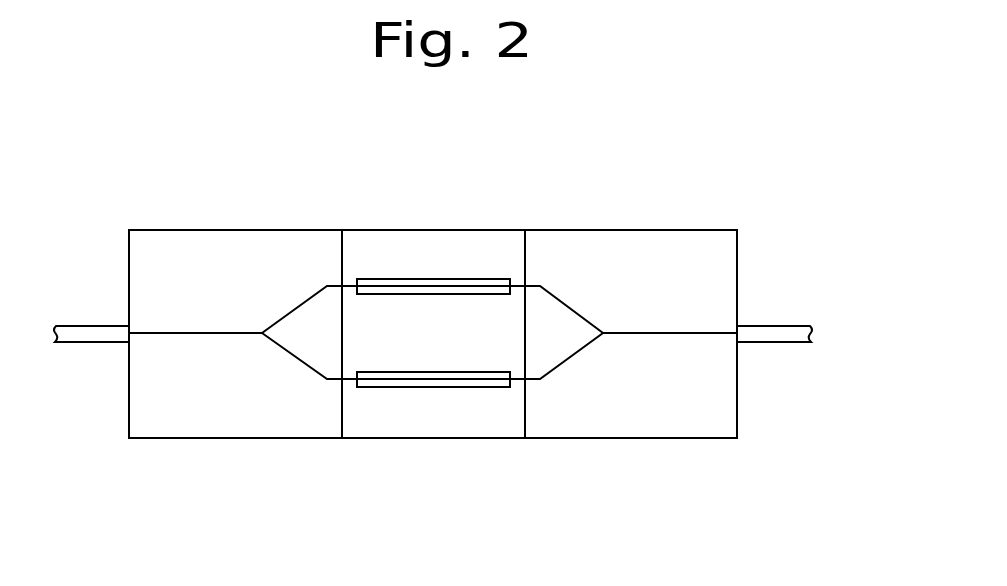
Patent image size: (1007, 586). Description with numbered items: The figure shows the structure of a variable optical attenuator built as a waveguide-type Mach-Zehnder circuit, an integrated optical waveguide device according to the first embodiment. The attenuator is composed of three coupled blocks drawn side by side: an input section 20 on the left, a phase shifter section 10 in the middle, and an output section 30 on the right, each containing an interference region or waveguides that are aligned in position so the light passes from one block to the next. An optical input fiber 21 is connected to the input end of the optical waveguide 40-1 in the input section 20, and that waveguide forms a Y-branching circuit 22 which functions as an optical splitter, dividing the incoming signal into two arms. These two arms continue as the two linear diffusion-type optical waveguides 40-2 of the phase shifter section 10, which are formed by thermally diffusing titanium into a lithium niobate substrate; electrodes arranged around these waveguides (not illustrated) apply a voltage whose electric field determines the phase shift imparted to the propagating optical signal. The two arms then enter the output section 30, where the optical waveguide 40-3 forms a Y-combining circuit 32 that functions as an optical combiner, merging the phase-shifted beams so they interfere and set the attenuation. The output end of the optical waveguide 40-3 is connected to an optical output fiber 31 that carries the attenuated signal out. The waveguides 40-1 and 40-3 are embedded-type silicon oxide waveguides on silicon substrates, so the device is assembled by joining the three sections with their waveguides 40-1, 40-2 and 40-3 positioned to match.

The phase shifter section 10 is at (400, 248).
The input section 20 is at (185, 438).
The optical input fiber 21 is at (96, 326).
The Y-branching circuit 22 is at (283, 393).
The output section 30 is at (595, 438).
The optical output fiber 31 is at (780, 342).
The Y-combining circuit 32 is at (565, 393).
The optical waveguide 40-1 is at (150, 333).
The optical waveguides 40-2 is at (473, 278).
The optical waveguide 40-3 is at (623, 333).